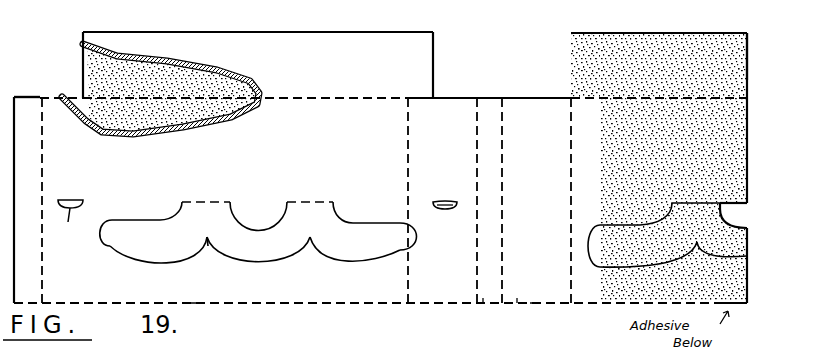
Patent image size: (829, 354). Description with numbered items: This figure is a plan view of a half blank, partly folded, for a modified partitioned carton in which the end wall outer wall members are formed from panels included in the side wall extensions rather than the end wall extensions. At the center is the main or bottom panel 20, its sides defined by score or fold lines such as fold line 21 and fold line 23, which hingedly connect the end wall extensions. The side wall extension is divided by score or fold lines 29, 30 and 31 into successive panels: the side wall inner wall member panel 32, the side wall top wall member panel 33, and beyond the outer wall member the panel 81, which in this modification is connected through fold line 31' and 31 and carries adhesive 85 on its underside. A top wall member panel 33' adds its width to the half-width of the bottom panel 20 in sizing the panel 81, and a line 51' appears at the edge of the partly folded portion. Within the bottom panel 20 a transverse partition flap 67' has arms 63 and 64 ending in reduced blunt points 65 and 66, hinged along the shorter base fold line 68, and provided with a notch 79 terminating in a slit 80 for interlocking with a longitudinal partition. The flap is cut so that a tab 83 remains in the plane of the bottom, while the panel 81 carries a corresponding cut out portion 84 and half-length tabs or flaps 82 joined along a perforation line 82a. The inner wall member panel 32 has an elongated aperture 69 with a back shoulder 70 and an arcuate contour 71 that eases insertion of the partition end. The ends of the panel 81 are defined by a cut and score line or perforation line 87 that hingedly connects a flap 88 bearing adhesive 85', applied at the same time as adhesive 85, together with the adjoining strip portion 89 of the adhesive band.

The main or bottom panel 20 is at (355, 145).
The score or fold line 21 is at (408, 173).
The score or fold line 23 is at (300, 98).
The score or fold line 29 is at (42, 138).
The score or fold line 30 is at (16, 189).
The score or fold line 31 is at (319, 200).
The score or fold line 31' is at (290, 200).
The side wall inner wall member panel 32 is at (53, 278).
The side wall top wall member panel 33 is at (372, 328).
The side wall top wall member panel 33' is at (249, 203).
The end wall edge 51' is at (449, 65).
The arm 63 is at (378, 225).
The arm 64 is at (133, 250).
The reduced end or blunt point 65 is at (417, 248).
The reduced end or blunt point 66 is at (107, 236).
The transverse partition flap 67' is at (332, 261).
The score or fold line 68 is at (303, 200).
The elongated aperture 69 is at (452, 203).
The back face or shoulder 70 is at (440, 203).
The arcuate contour 71 is at (68, 218).
The notch 79 is at (208, 245).
The slit or cut 80 is at (207, 242).
The panel 81 is at (220, 113).
The tab or flap 82 is at (733, 255).
The cut and score line or line of perforations 82a is at (727, 214).
The tab 83 is at (247, 208).
The cut out portion 84 is at (745, 208).
The adhesive 85 is at (419, 118).
The adhesive 85' is at (455, 51).
The cut and score line or line of perforations 87 is at (258, 92).
The flap 88 is at (742, 67).
The strip end 89 is at (115, 73).